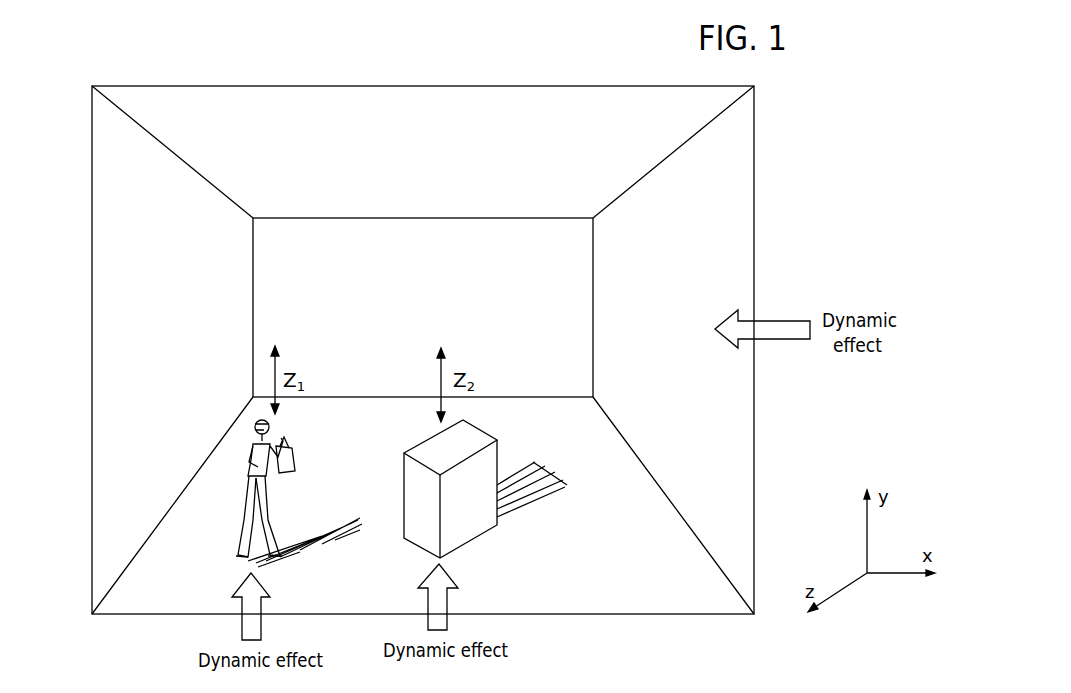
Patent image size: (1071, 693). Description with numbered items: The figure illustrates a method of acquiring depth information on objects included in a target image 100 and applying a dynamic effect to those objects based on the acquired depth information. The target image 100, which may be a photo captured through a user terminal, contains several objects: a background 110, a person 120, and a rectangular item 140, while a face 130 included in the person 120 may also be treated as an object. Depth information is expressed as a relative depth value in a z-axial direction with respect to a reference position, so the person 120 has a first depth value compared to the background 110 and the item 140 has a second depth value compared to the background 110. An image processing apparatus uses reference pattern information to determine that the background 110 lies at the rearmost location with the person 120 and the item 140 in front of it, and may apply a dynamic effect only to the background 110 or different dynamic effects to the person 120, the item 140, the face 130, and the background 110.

The target image 100 is at (430, 86).
The background 110 is at (507, 102).
The person 120 is at (258, 465).
The face 130 is at (258, 428).
The rectangular item 140 is at (475, 528).